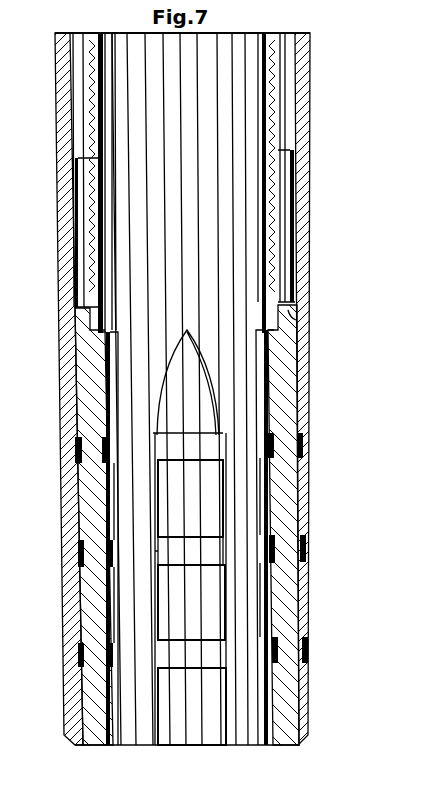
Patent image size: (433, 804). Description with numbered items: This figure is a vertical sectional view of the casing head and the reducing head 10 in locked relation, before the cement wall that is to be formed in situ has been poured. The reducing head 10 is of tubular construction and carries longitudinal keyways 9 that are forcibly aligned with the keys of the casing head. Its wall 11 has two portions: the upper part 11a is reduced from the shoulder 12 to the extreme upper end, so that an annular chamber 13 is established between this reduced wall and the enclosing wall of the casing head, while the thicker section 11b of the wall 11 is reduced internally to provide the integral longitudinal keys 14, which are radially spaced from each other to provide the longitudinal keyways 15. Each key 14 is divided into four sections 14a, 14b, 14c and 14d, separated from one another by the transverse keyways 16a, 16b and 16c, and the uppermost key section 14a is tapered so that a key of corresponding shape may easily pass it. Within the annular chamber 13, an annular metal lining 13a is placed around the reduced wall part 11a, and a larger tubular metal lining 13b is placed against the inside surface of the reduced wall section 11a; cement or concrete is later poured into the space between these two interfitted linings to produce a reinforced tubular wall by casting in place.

The longitudinal keyways 9 is at (137, 608).
The reducing head 10 is at (312, 485).
The wall 11 is at (330, 392).
The upper part of the wall 11a is at (267, 268).
The thicker section of the wall 11b is at (293, 306).
The shoulder 12 is at (288, 312).
The annular chamber 13 is at (298, 95).
The annular metal lining 13a is at (278, 147).
The tubular metal lining 13b is at (290, 183).
The longitudinal keys 14 is at (190, 589).
The uppermost key section 14a is at (168, 390).
The key section 14b is at (163, 517).
The key section 14c is at (191, 602).
The key section 14d is at (187, 738).
The longitudinal keyways 15 is at (248, 582).
The transverse keyway 16a is at (170, 445).
The transverse keyway 16b is at (177, 555).
The transverse keyway 16c is at (160, 655).